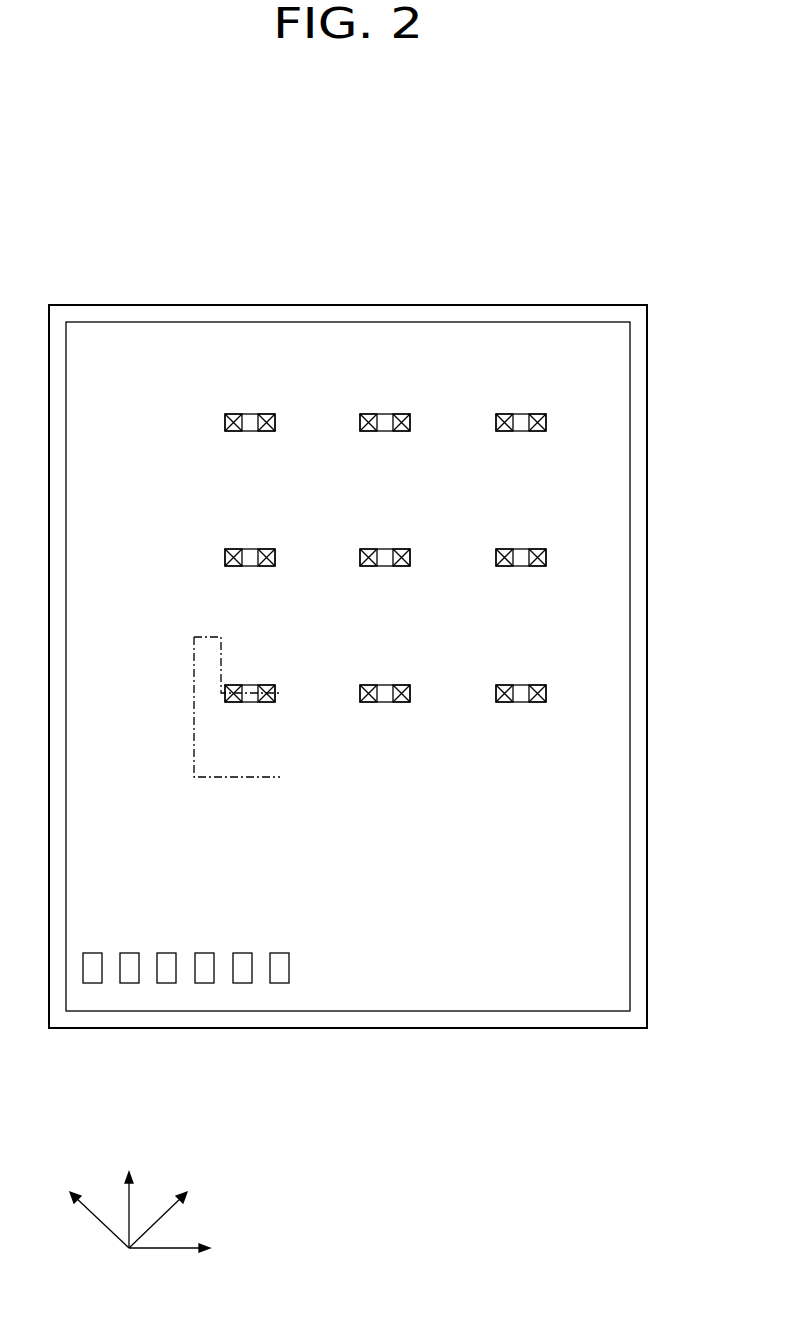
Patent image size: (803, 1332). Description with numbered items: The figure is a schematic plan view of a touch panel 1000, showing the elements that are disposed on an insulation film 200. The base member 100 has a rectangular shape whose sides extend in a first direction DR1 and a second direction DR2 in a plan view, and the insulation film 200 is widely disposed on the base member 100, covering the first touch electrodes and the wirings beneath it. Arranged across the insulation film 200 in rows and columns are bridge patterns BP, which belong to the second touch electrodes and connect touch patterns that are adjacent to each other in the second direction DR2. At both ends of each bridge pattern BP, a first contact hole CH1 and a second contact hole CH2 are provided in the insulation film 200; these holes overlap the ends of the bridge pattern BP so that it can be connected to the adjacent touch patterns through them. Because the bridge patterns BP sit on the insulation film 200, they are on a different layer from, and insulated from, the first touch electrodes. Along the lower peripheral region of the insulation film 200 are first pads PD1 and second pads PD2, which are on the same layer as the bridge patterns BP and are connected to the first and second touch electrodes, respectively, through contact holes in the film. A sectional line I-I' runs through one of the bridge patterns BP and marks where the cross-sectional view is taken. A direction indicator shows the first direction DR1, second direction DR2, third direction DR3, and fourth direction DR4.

The touch panel 1000 is at (597, 218).
The base member 100 is at (609, 304).
The insulation film 200 is at (631, 375).
The bridge pattern BP is at (250, 432).
The first contact hole CH1 is at (233, 413).
The second contact hole CH2 is at (265, 413).
The sectional line I-I' I is at (242, 713).
The first pad PD1 is at (205, 985).
The second pad PD2 is at (93, 985).
The first direction DR1 is at (129, 1195).
The second direction DR2 is at (190, 1250).
The third direction DR3 is at (169, 1207).
The fourth direction DR4 is at (88, 1207).